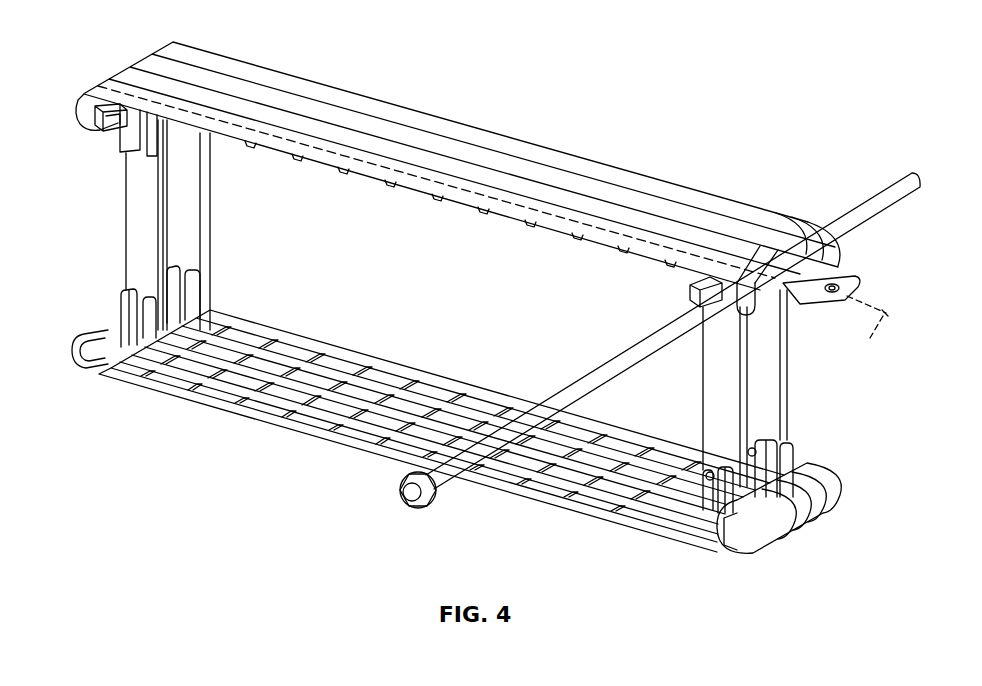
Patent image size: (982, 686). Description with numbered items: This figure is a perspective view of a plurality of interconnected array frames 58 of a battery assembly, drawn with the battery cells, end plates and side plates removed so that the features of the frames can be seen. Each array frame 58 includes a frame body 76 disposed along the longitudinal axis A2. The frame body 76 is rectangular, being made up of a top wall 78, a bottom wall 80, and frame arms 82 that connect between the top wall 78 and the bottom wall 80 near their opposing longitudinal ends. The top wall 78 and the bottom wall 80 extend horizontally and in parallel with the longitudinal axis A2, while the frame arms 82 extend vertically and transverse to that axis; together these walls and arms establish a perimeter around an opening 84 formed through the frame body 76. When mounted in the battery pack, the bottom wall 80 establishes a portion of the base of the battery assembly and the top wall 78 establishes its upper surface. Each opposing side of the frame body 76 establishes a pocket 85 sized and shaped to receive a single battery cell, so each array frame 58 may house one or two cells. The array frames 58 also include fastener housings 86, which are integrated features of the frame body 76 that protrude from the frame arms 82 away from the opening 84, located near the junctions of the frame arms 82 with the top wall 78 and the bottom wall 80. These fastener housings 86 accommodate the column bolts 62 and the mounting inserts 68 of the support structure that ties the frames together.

The array frame 58 is at (116, 84).
The column bolt 62 is at (885, 226).
The mounting insert 68 is at (858, 285).
The frame body 76 is at (143, 195).
The top wall 78 is at (352, 152).
The bottom wall 80 is at (330, 437).
The frame arm 82 is at (128, 248).
The opening 84 is at (437, 311).
The pocket 85 is at (195, 320).
The fastener housing 86 is at (104, 96).
The longitudinal axis A2 is at (867, 333).